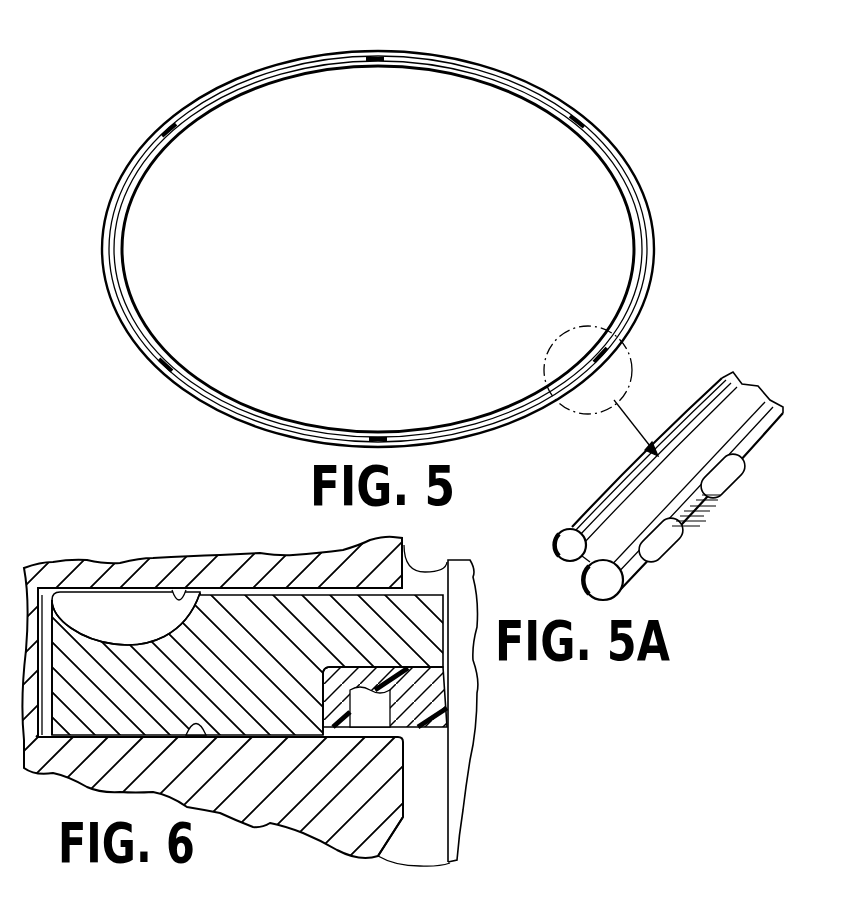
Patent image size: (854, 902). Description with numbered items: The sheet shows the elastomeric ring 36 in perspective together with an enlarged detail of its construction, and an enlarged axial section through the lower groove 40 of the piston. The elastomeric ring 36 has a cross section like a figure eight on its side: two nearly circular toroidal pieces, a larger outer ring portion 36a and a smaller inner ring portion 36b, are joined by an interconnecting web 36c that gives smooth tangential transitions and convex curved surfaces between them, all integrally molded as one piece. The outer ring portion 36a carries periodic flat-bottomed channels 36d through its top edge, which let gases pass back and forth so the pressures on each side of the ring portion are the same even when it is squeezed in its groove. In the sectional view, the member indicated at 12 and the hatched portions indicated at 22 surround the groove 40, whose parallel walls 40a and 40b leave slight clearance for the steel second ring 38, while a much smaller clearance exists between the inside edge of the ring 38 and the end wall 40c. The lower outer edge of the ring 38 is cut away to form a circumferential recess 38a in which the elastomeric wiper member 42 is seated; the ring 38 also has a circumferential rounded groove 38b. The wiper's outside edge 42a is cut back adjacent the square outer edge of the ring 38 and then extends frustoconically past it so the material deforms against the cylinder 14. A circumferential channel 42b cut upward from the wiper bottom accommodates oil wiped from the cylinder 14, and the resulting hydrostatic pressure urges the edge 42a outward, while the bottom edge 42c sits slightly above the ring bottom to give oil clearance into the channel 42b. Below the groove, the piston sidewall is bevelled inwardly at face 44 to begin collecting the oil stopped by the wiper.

In FIG. 6, the seal assembly 12 is at (404, 546).
In FIG. 6, the cylinder 14 is at (446, 567).
In FIG. 6, the housing 22 is at (316, 563).
In FIG. 5, the elastomeric ring 36 is at (375, 230).
In FIG. 5A, the elastomeric ring 36 is at (655, 493).
In FIG. 5, the outer ring portion 36a is at (289, 64).
In FIG. 5A, the outer ring portion 36a is at (624, 592).
In FIG. 5, the inner ring portion 36b is at (425, 72).
In FIG. 5A, the inner ring portion 36b is at (574, 529).
In FIG. 5, the interconnecting web 36c is at (268, 72).
In FIG. 5A, the interconnecting web 36c is at (588, 556).
In FIG. 5, the channels 36d is at (372, 56).
In FIG. 5A, the channels 36d is at (692, 512).
In FIG. 6, the second ring 38 is at (233, 681).
In FIG. 6, the circumferential recess 38a is at (345, 671).
In FIG. 6, the circumferential rounded groove 38b is at (104, 648).
In FIG. 6, the groove 40 is at (167, 624).
In FIG. 6, the parallel wall 40a is at (178, 600).
In FIG. 6, the parallel wall 40b is at (193, 728).
In FIG. 6, the end wall 40c is at (42, 665).
In FIG. 6, the elastomeric wiper member 42 is at (429, 721).
In FIG. 6, the outside edge 42a is at (448, 716).
In FIG. 6, the circumferential channel 42b is at (373, 707).
In FIG. 6, the bottom edge 42c is at (425, 728).
In FIG. 6, the bevelled face 44 is at (390, 816).